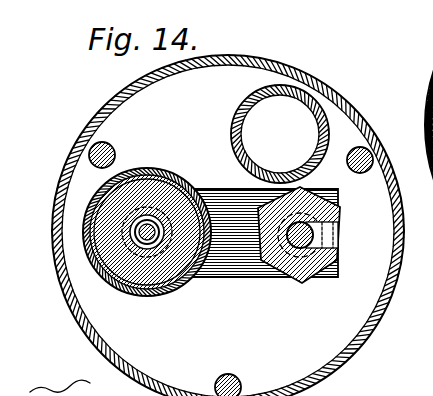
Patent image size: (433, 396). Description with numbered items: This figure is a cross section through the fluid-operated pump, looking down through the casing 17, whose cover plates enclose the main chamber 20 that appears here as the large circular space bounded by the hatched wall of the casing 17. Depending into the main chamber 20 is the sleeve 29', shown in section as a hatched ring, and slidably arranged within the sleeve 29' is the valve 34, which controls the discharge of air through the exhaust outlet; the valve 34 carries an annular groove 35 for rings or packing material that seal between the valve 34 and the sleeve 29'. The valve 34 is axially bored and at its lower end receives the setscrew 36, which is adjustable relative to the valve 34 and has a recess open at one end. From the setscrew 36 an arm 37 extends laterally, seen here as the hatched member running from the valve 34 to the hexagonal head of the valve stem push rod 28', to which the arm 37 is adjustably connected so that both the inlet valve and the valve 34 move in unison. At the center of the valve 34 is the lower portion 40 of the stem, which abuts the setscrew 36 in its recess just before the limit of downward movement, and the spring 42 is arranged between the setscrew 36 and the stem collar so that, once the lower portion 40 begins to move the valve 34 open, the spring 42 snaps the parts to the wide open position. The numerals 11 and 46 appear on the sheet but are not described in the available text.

The adjacent figure casing 11 is at (426, 150).
The casing 17 is at (263, 62).
The main chamber 20 is at (368, 285).
The valve stem push rod 28' is at (318, 235).
The sleeve 29' is at (119, 230).
The valve 34 is at (91, 266).
The annular groove 35 is at (153, 169).
The setscrew 36 is at (182, 300).
The arm 37 is at (223, 200).
The lower portion of stem 40 is at (147, 245).
The spring 42 is at (172, 194).
The upper bearing ring 46 is at (284, 118).